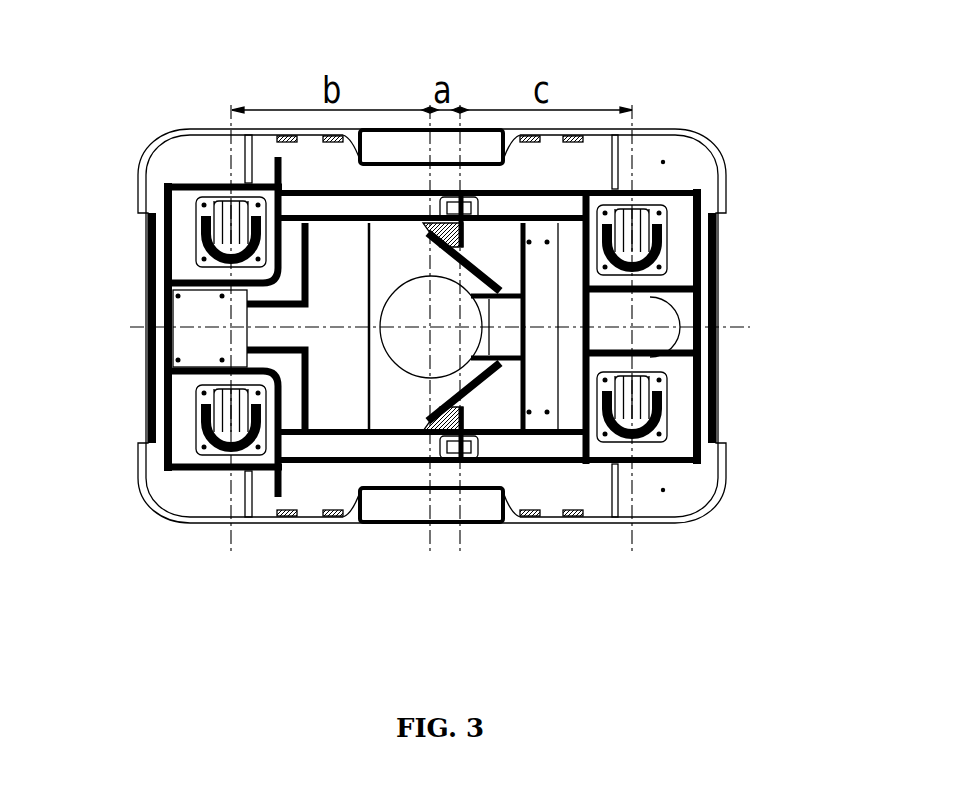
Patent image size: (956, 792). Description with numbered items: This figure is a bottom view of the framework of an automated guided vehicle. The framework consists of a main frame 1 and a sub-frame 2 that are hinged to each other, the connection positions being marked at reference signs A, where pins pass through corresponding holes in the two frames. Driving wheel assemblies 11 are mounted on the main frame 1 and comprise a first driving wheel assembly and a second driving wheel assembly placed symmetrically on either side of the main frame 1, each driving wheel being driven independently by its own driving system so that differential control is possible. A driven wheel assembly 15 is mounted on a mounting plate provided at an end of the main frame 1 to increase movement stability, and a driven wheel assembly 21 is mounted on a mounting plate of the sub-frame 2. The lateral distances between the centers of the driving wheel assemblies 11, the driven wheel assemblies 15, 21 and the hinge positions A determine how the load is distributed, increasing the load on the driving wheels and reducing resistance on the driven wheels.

The main frame 1 is at (432, 370).
The sub-frame 2 is at (432, 394).
The driving wheel assembly 11 is at (388, 347).
The driven wheel assembly 15 is at (168, 326).
The driven wheel assembly 21 is at (709, 322).
The connection position A is at (458, 317).